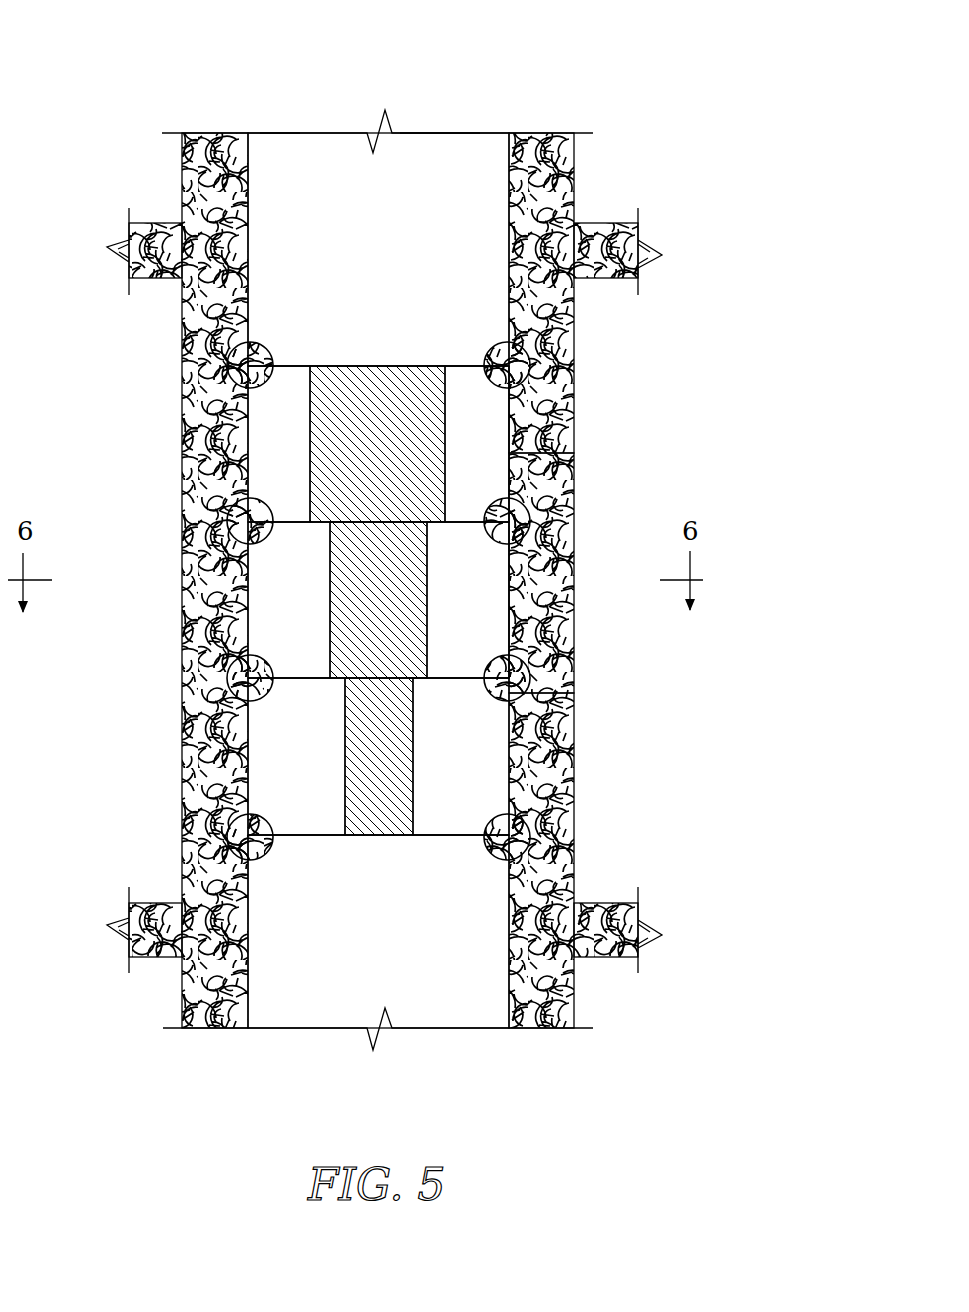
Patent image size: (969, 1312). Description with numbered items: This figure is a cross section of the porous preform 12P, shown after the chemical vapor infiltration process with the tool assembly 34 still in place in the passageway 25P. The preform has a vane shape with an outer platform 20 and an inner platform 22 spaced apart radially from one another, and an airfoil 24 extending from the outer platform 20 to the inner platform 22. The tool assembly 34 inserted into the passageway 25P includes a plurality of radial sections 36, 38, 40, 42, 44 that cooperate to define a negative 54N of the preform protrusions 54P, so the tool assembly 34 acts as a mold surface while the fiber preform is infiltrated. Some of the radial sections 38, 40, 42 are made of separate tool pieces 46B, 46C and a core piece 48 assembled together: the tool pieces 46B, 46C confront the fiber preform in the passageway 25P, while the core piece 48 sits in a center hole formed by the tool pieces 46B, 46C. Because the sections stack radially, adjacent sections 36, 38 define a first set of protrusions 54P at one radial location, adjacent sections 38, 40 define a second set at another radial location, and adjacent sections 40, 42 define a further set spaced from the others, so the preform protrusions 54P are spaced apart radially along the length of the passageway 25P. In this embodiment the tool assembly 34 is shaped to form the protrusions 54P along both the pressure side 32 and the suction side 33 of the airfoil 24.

The porous preform 12P is at (433, 549).
The outer platform 20 is at (608, 210).
The inner platform 22 is at (617, 960).
The airfoil 24 is at (582, 362).
The passageway 25P is at (283, 155).
The pressure side 32 is at (578, 528).
The suction side 33 is at (182, 530).
The tool assembly 34 is at (487, 108).
The radial section 36 is at (399, 903).
The radial section 38 is at (520, 748).
The radial section 40 is at (512, 585).
The radial section 42 is at (520, 450).
The radial section 44 is at (399, 263).
The tool piece 46B is at (505, 468).
The tool piece 46C is at (305, 454).
The core piece 48 is at (395, 458).
The negative 54N is at (260, 862).
The preform protrusions 54P is at (268, 348).